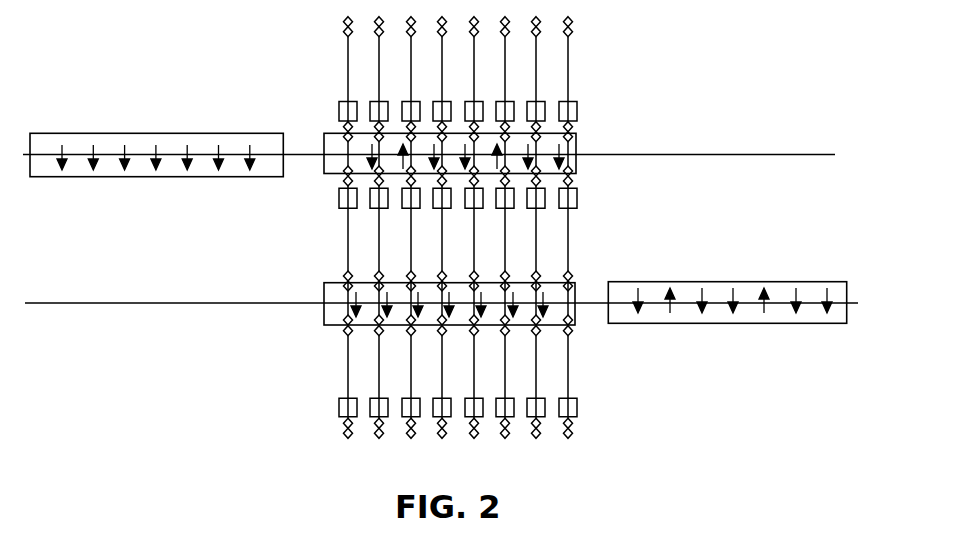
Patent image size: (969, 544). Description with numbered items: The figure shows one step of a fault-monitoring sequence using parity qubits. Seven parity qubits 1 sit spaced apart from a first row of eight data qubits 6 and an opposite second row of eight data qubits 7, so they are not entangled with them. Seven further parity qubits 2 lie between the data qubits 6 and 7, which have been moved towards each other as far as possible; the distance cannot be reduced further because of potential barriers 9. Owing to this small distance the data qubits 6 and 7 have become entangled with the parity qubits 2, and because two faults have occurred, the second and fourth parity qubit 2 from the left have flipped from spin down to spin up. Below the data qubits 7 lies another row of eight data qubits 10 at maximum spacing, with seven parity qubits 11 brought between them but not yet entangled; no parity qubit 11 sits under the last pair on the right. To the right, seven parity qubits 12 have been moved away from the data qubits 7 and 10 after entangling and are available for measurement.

The parity qubits 1 is at (124, 150).
The parity qubits 2 is at (325, 147).
The data qubits 6 is at (577, 108).
The data qubits 7 is at (577, 200).
The potential barriers 9 is at (324, 164).
The data qubits 10 is at (577, 411).
The parity qubits 11 is at (355, 297).
The parity qubits 12 is at (828, 295).